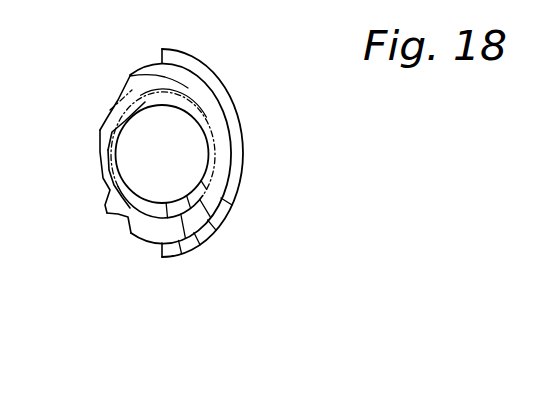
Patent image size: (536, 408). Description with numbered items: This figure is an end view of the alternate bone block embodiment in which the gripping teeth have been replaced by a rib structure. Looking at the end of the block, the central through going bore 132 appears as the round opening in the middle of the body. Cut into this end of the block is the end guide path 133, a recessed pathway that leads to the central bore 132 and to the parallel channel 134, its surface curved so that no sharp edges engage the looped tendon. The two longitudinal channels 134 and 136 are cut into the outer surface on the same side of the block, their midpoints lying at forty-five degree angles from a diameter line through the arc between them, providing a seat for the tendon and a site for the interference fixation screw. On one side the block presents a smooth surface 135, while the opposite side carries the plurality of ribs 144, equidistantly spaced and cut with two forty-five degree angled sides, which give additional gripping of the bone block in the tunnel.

The central through going bore 132 is at (181, 162).
The end guide path 133 is at (150, 98).
The longitudinal channel 134 is at (115, 104).
The smooth surface 135 is at (97, 170).
The longitudinal channel 136 is at (123, 218).
The ribs 144 is at (243, 163).